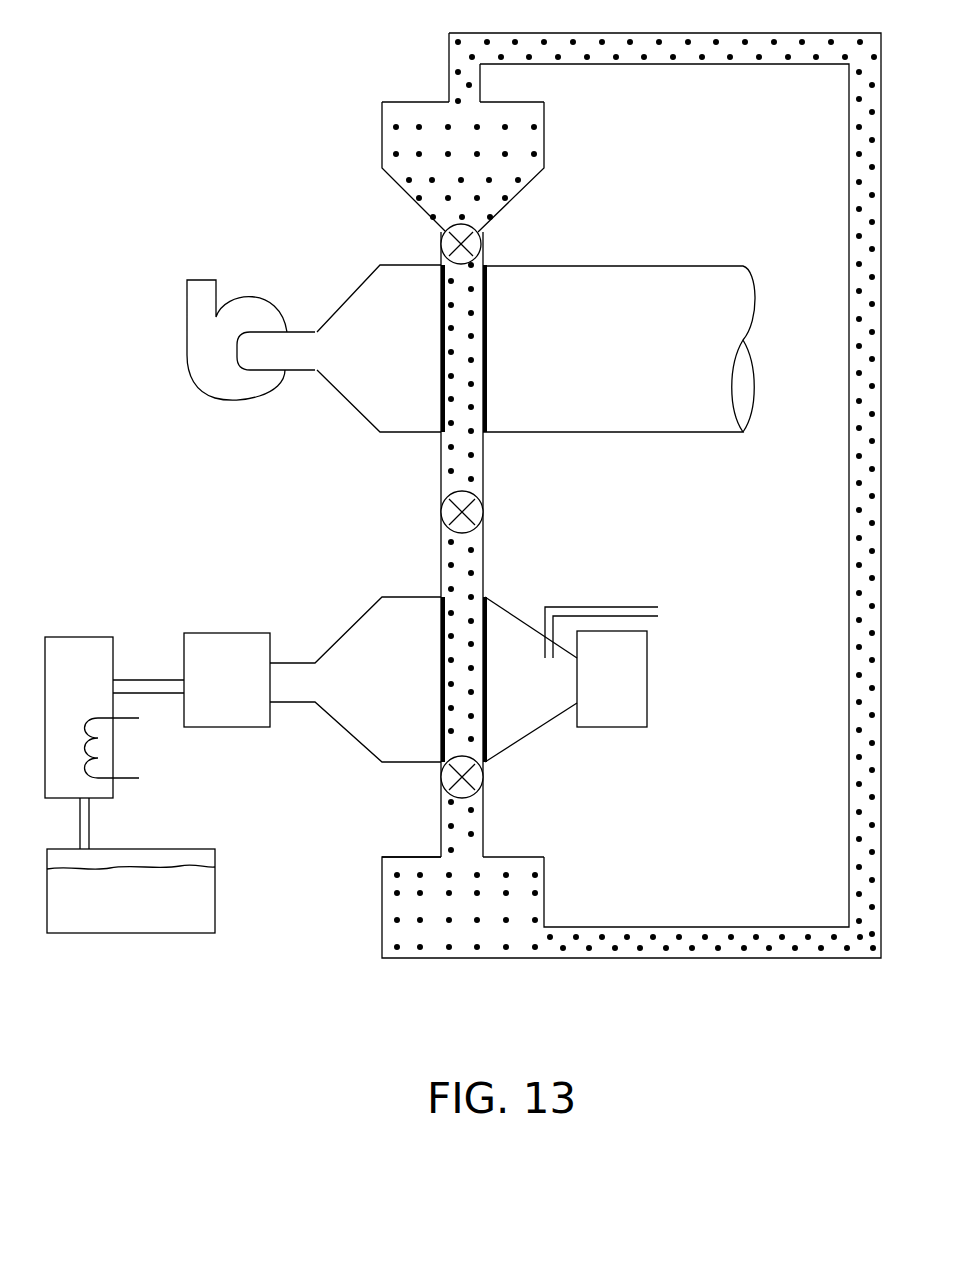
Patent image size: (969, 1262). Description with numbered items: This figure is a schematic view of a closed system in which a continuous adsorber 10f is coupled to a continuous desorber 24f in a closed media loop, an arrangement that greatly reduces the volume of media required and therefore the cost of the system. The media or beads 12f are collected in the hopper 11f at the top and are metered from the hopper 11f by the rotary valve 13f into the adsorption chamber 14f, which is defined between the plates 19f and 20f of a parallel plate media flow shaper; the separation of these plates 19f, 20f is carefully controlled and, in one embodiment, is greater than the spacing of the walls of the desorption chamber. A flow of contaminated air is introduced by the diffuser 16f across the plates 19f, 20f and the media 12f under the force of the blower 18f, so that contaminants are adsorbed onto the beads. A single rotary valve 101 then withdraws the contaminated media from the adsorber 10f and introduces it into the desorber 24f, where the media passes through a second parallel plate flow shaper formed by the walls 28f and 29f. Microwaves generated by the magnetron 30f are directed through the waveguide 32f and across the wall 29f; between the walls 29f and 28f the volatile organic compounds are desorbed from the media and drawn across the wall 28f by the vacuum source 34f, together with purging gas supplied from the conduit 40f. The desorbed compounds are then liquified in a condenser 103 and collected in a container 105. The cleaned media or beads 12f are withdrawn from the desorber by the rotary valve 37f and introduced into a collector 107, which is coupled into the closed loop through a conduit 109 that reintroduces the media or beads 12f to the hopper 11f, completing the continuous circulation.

The adsorber 10f is at (306, 106).
The hopper 11f is at (523, 153).
The media or beads 12f is at (408, 187).
The rotary valve 13f is at (482, 240).
The adsorption chamber 14f is at (445, 343).
The diffuser 16f is at (664, 273).
The blower 18f is at (200, 325).
The plate 19f is at (437, 410).
The plate 20f is at (486, 412).
The desorber 24f is at (410, 565).
The wall 28f is at (440, 725).
The wall 29f is at (485, 740).
The magnetron 30f is at (630, 675).
The waveguide 32f is at (505, 625).
The vacuum source 34f is at (235, 640).
The rotary valve 37f is at (483, 782).
The conduit 40f is at (627, 607).
The rotary valve 101 is at (483, 512).
The condenser 103 is at (100, 650).
The container 105 is at (193, 895).
The collector 107 is at (532, 882).
The conduit 109 is at (848, 760).